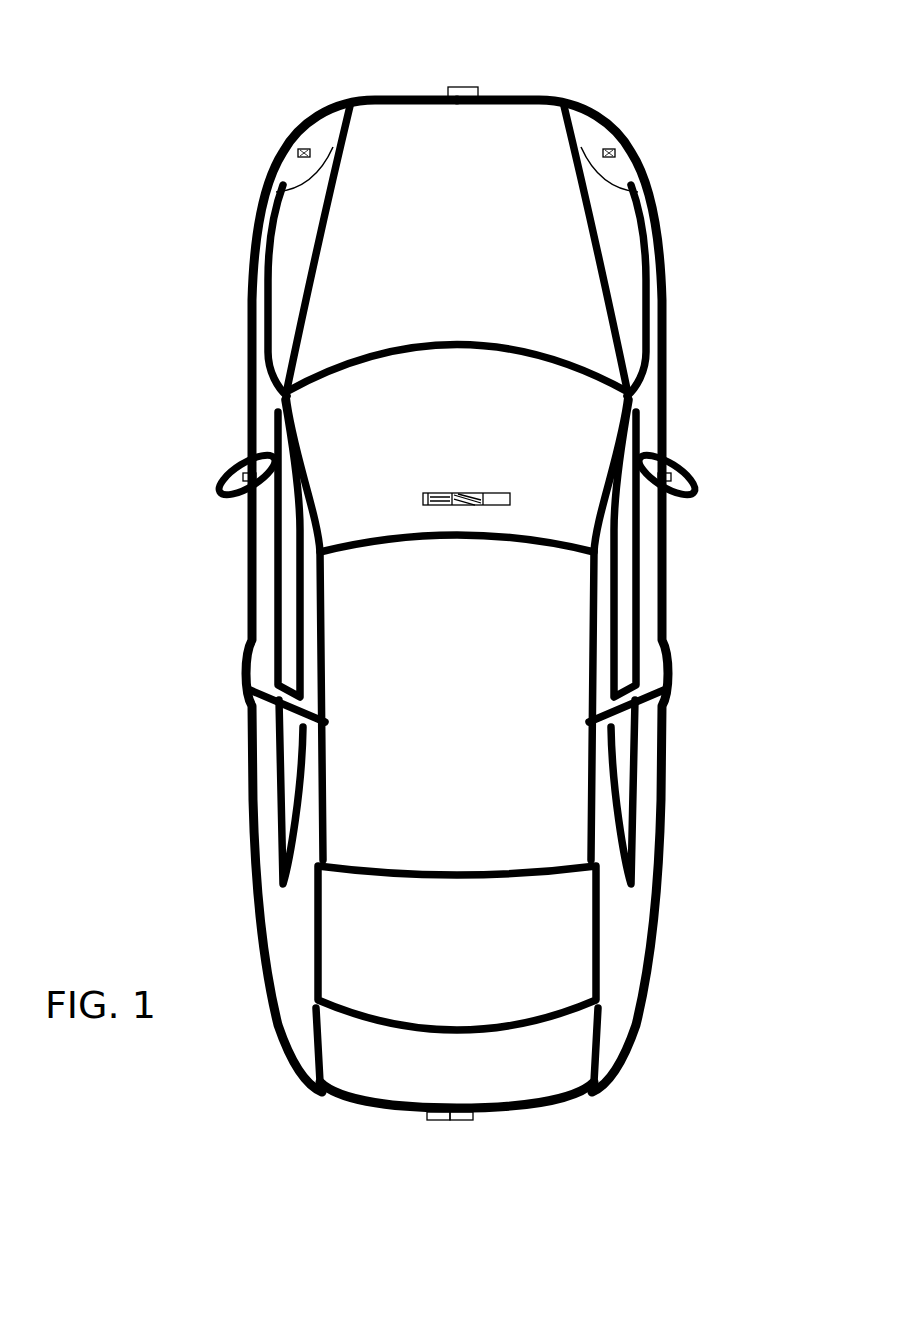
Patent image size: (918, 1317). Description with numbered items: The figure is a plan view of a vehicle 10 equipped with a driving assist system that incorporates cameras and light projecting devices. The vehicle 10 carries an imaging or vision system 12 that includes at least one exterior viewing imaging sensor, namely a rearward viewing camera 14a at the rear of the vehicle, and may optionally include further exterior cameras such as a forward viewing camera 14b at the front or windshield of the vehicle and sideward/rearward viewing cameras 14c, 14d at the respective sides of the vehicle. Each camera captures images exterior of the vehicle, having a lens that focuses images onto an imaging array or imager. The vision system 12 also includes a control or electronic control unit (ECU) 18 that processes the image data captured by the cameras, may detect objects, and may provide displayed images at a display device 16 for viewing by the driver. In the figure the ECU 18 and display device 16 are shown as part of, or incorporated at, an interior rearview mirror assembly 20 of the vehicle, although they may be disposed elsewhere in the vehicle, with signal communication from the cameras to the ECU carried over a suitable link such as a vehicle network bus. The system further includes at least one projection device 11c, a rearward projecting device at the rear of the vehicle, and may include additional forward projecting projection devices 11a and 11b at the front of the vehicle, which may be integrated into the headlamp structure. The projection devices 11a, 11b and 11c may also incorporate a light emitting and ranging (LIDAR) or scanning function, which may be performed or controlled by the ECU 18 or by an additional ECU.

The vehicle 10 is at (196, 192).
The projection device 11a is at (292, 149).
The projection device 11b is at (622, 149).
The projection device 11c is at (441, 1121).
The vision system 12 is at (400, 1146).
The rearward viewing camera 14a is at (461, 1121).
The forward viewing camera 14b is at (467, 86).
The sideward/rearward viewing camera 14c is at (235, 470).
The sideward/rearward viewing camera 14d is at (680, 470).
The display device 16 is at (440, 496).
The electronic control unit 18 is at (463, 495).
The interior rearview mirror assembly 20 is at (510, 494).